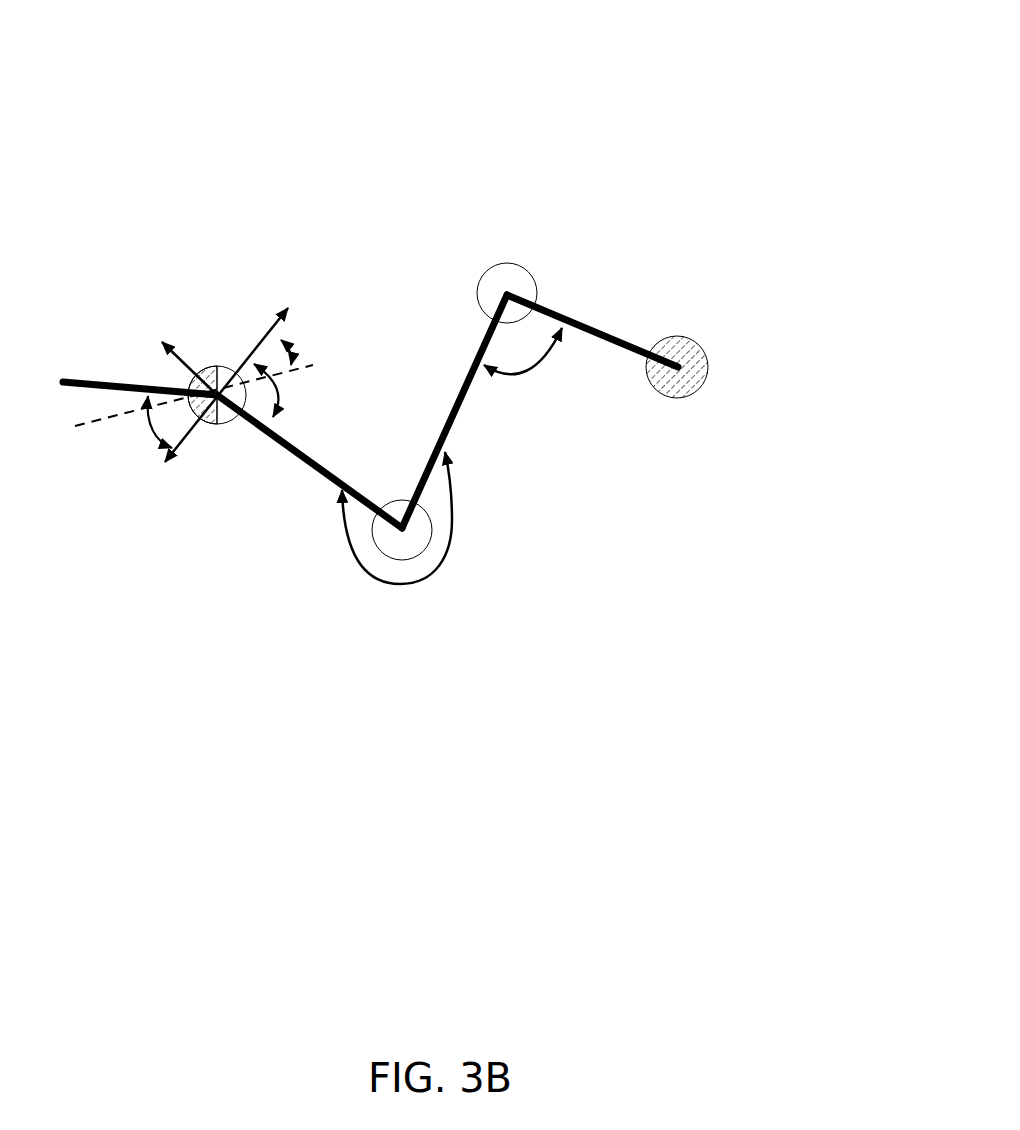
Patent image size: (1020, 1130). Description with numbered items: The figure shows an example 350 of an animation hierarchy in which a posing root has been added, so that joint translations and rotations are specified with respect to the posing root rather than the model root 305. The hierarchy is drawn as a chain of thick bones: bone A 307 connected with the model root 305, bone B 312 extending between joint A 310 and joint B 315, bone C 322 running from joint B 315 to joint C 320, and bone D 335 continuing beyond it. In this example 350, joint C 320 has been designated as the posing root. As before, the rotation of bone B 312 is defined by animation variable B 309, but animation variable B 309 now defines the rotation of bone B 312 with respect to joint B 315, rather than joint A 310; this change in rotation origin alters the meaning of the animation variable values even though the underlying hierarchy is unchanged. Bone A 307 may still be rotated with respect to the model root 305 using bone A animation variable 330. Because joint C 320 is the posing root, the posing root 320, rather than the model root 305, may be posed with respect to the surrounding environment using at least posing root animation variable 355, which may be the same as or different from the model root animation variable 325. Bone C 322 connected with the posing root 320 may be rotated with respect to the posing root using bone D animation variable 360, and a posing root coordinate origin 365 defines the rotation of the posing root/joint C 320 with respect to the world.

The example animation hierarchy with posing root 350 is at (194, 216).
The model root 305 is at (695, 390).
The bone A 307 is at (607, 332).
The animation variable B 309 is at (411, 580).
The joint A 310 is at (508, 265).
The bone B 312 is at (462, 392).
The joint B 315 is at (400, 500).
The joint C / posing root 320 is at (216, 424).
The bone C 322 is at (303, 458).
The model root animation variable 325 is at (283, 337).
The bone A animation variable 330 is at (538, 367).
The bone D 335 is at (120, 383).
The posing root animation variable 355 is at (272, 416).
The bone D animation variable 360 is at (153, 427).
The posing root coordinate origin 365 is at (191, 386).